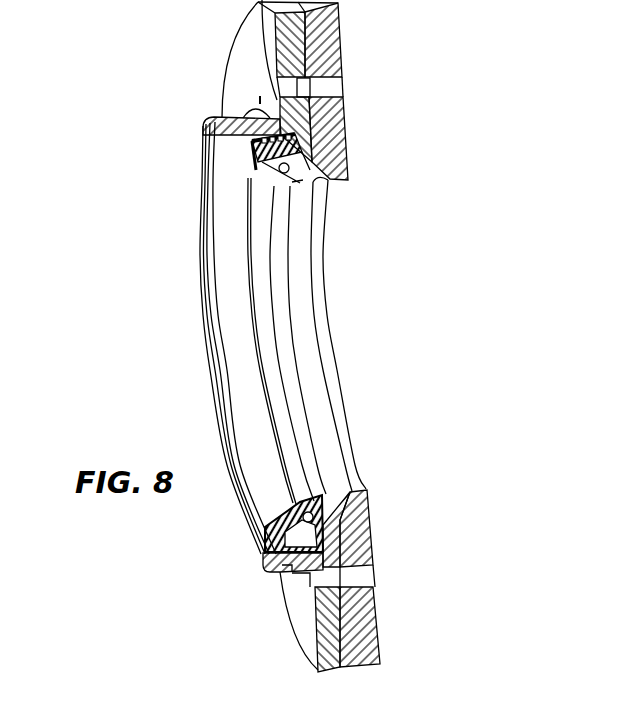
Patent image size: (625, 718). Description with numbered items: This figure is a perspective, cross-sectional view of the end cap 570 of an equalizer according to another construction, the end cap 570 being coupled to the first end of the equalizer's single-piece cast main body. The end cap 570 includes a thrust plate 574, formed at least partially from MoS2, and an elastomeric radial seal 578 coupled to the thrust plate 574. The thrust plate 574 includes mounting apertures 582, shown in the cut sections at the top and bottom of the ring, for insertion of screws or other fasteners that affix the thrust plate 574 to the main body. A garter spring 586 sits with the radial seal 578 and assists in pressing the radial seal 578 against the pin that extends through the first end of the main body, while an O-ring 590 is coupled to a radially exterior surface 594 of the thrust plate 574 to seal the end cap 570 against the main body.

The end cap 570 is at (114, 118).
The thrust plate 574 is at (349, 119).
The radial seal 578 is at (211, 311).
The mounting apertures 582 is at (376, 570).
The garter spring 586 is at (279, 171).
The O-ring 590 is at (248, 110).
The radially exterior surface 594 is at (256, 120).